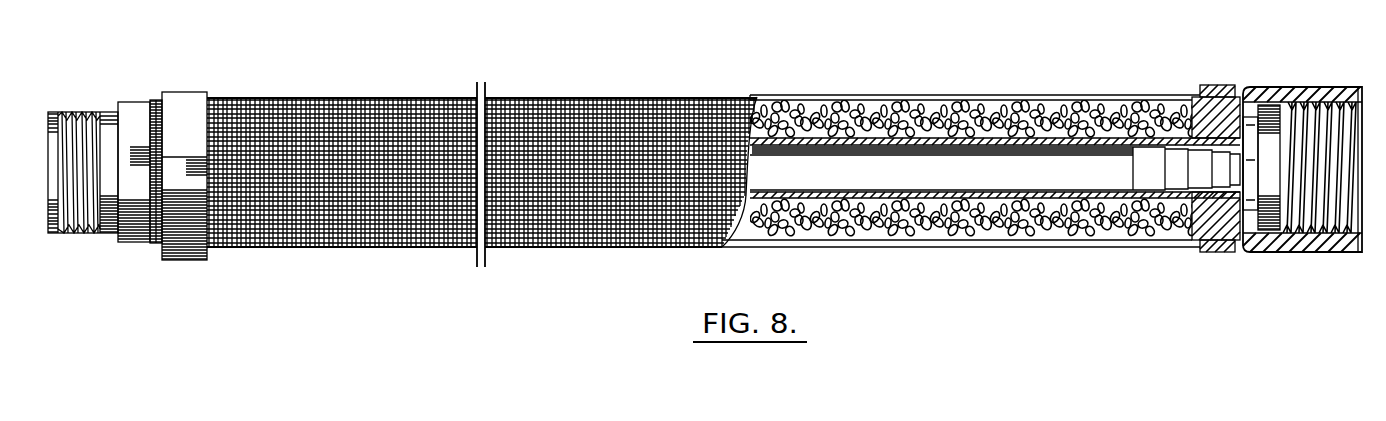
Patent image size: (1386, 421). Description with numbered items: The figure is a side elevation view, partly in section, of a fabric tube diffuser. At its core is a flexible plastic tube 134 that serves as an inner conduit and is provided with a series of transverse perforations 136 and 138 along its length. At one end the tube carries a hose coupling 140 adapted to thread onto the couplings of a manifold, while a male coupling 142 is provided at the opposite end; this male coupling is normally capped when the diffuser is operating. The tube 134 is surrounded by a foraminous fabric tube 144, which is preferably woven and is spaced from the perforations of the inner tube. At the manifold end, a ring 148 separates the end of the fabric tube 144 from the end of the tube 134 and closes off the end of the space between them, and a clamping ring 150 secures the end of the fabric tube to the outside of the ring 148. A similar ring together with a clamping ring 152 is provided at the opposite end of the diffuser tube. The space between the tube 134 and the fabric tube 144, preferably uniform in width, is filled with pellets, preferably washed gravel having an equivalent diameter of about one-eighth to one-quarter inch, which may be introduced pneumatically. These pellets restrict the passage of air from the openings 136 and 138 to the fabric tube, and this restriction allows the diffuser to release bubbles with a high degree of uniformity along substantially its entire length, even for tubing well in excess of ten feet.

The flexible plastic tube 134 is at (1017, 144).
The transverse perforation 136 is at (985, 146).
The transverse perforation 138 is at (785, 141).
The hose coupling 140 is at (1296, 88).
The male coupling 142 is at (108, 137).
The foraminous fabric tube 144 is at (965, 96).
The ring 148 is at (1202, 105).
The clamping ring 150 is at (1224, 85).
The clamping ring 152 is at (186, 100).